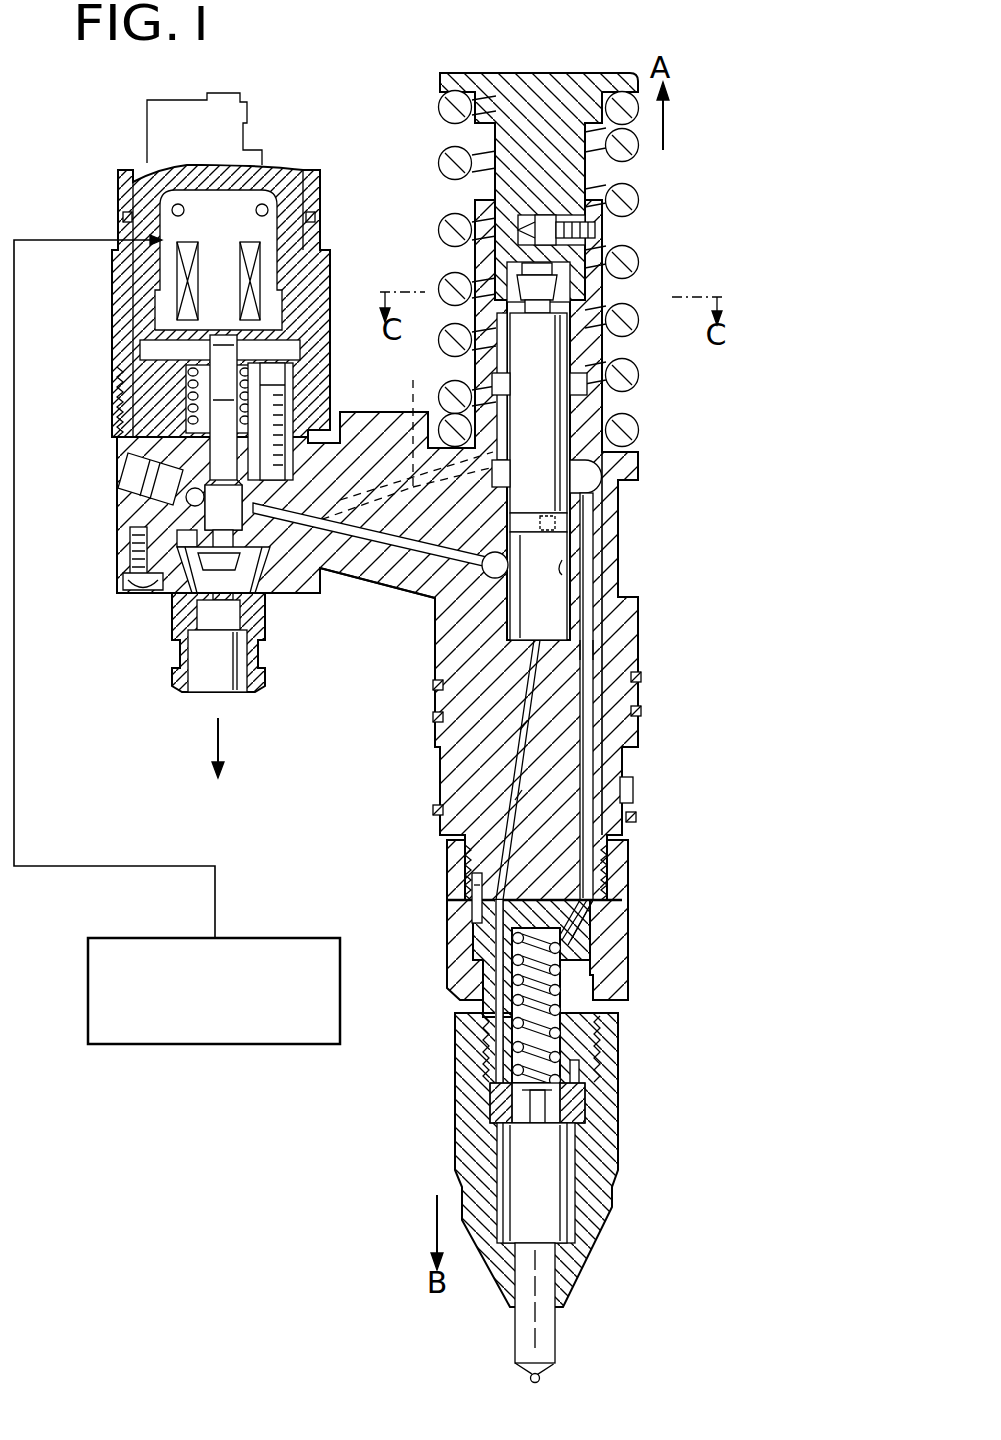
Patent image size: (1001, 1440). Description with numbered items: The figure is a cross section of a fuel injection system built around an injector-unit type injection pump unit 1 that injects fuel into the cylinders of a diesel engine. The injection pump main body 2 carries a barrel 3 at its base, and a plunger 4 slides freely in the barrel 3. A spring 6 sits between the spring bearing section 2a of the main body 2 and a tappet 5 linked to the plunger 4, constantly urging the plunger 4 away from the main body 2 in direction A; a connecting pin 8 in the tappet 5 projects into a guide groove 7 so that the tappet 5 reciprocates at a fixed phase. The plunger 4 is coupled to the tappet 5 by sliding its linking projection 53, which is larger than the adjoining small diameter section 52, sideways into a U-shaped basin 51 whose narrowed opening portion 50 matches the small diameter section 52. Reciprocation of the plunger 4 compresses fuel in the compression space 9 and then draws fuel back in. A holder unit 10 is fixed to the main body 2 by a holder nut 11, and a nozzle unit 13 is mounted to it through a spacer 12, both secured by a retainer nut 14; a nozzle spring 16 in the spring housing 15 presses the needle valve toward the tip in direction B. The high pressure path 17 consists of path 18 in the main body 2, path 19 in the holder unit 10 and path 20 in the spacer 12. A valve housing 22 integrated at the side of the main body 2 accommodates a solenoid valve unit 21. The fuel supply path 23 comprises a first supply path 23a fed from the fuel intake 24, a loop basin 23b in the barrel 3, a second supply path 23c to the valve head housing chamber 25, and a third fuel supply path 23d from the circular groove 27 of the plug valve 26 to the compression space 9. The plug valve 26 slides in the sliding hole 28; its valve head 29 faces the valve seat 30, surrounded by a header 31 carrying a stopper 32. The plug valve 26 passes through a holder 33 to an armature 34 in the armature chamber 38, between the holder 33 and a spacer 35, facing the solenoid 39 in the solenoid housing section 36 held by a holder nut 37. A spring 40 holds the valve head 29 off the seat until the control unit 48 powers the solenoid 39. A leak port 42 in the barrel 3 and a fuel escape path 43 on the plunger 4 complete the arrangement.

The injection pump unit 1 is at (655, 630).
The injection pump main body 2 is at (625, 742).
The spring bearing section 2a is at (618, 455).
The barrel 3 is at (560, 600).
The plunger 4 is at (550, 345).
The tappet 5 is at (503, 92).
The spring 6 is at (632, 207).
The guide groove 7 is at (549, 306).
The connecting pin 8 is at (596, 232).
The compression space 9 is at (520, 632).
The holder unit 10 is at (580, 980).
The holder nut 11 is at (622, 928).
The spacer 12 is at (562, 1100).
The nozzle unit 13 is at (555, 1208).
The retainer nut 14 is at (465, 1157).
The spring housing 15 is at (572, 1043).
The nozzle spring 16 is at (492, 1040).
The high pressure path 17 is at (515, 792).
The path 18 is at (520, 722).
The path 19 is at (500, 937).
The path 20 is at (492, 1100).
The solenoid valve unit 21 is at (330, 198).
The valve housing 22 is at (358, 572).
The fuel supply path 23 is at (603, 700).
The first supply path 23a is at (595, 651).
The loop basin 23b is at (592, 478).
The second supply path 23c is at (406, 437).
The third fuel supply path 23d is at (510, 578).
The fuel intake 24 is at (638, 785).
The valve head housing chamber 25 is at (150, 560).
The plug valve 26 is at (213, 453).
The circular groove 27 is at (190, 500).
The sliding hole 28 is at (165, 463).
The valve head 29 is at (268, 592).
The valve seat 30 is at (180, 532).
The header 31 is at (175, 642).
The stopper 32 is at (165, 592).
The holder 33 is at (300, 387).
The armature 34 is at (282, 347).
The spacer 35 is at (302, 312).
The solenoid housing section 36 is at (302, 240).
The holder nut 37 is at (318, 270).
The armature chamber 38 is at (117, 350).
The solenoid 39 is at (160, 270).
The spring 40 is at (190, 410).
The leak port 42 is at (572, 525).
The fuel escape path 43 is at (560, 518).
The control unit 48 is at (305, 938).
The opening portion 50 is at (493, 302).
The U-shaped basin 51 is at (480, 272).
The small diameter section 52 is at (556, 290).
The linking projection 53 is at (555, 268).